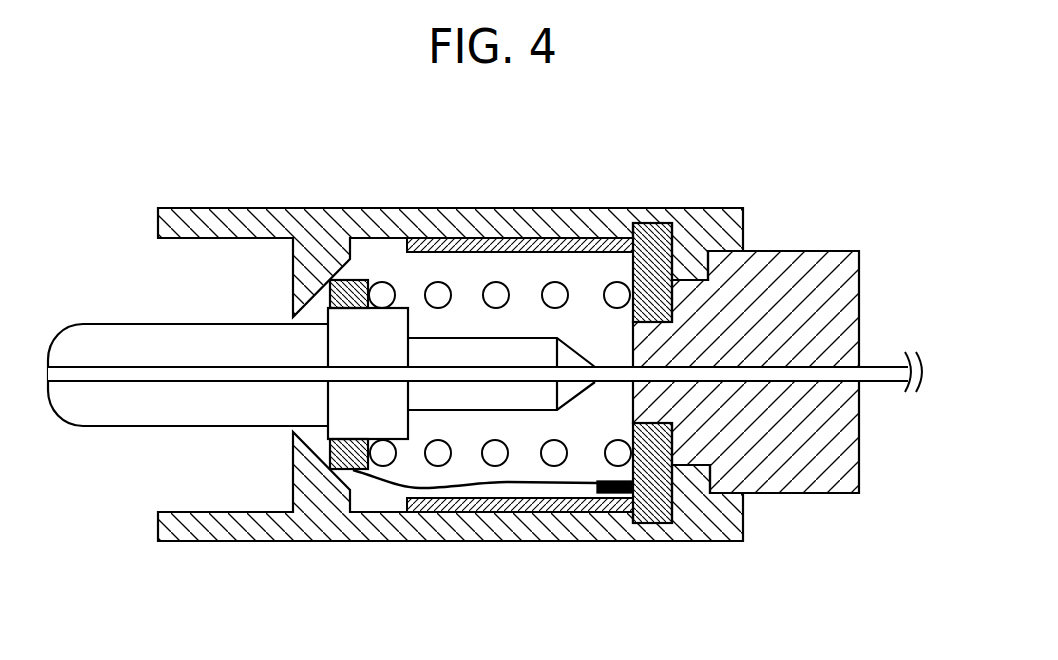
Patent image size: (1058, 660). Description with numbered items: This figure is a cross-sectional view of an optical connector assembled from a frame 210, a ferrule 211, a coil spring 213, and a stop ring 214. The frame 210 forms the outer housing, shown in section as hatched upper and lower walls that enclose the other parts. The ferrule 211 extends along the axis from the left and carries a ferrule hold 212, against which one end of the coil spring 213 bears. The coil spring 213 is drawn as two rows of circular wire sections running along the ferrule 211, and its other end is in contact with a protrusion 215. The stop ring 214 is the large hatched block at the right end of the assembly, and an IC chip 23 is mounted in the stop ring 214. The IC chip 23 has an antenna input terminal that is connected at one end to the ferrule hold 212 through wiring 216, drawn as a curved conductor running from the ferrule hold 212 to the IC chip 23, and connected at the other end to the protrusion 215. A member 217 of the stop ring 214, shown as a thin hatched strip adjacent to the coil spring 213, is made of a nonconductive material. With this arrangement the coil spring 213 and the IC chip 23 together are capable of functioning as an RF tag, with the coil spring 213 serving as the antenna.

The frame 210 is at (218, 207).
The ferrule 211 is at (123, 323).
The ferrule hold 212 is at (349, 279).
The coil spring 213 is at (442, 281).
The stop ring 214 is at (793, 228).
The protrusion 215 is at (657, 222).
The wiring 216 is at (390, 481).
The member 217 is at (535, 237).
The IC chip 23 is at (613, 494).